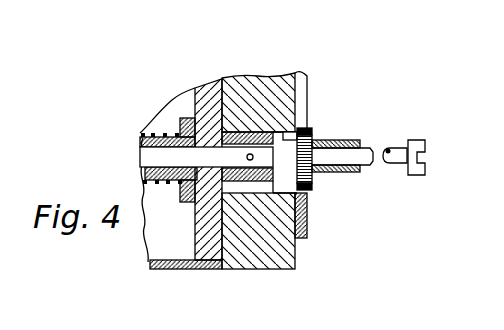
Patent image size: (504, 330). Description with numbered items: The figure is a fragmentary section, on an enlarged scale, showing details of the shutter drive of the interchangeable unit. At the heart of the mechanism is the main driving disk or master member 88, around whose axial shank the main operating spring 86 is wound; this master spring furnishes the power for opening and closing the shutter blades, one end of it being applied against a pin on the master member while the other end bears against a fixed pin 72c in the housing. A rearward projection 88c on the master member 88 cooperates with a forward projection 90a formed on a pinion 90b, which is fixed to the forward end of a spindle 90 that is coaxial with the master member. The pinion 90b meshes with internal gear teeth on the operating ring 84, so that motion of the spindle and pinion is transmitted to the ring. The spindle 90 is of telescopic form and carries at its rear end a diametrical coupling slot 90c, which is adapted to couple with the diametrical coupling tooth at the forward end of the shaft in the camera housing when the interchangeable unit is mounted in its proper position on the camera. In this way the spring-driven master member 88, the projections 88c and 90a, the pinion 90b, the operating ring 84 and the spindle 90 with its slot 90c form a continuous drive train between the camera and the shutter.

The base plate 72c is at (245, 265).
The operating ring 84 is at (308, 226).
The main operating spring 86 is at (143, 134).
The master member 88 is at (187, 105).
The rearward projection 88c is at (280, 126).
The spindle 90 is at (392, 150).
The forward projection 90a is at (310, 129).
The pinion 90b is at (313, 175).
The coupling slot 90c is at (425, 157).